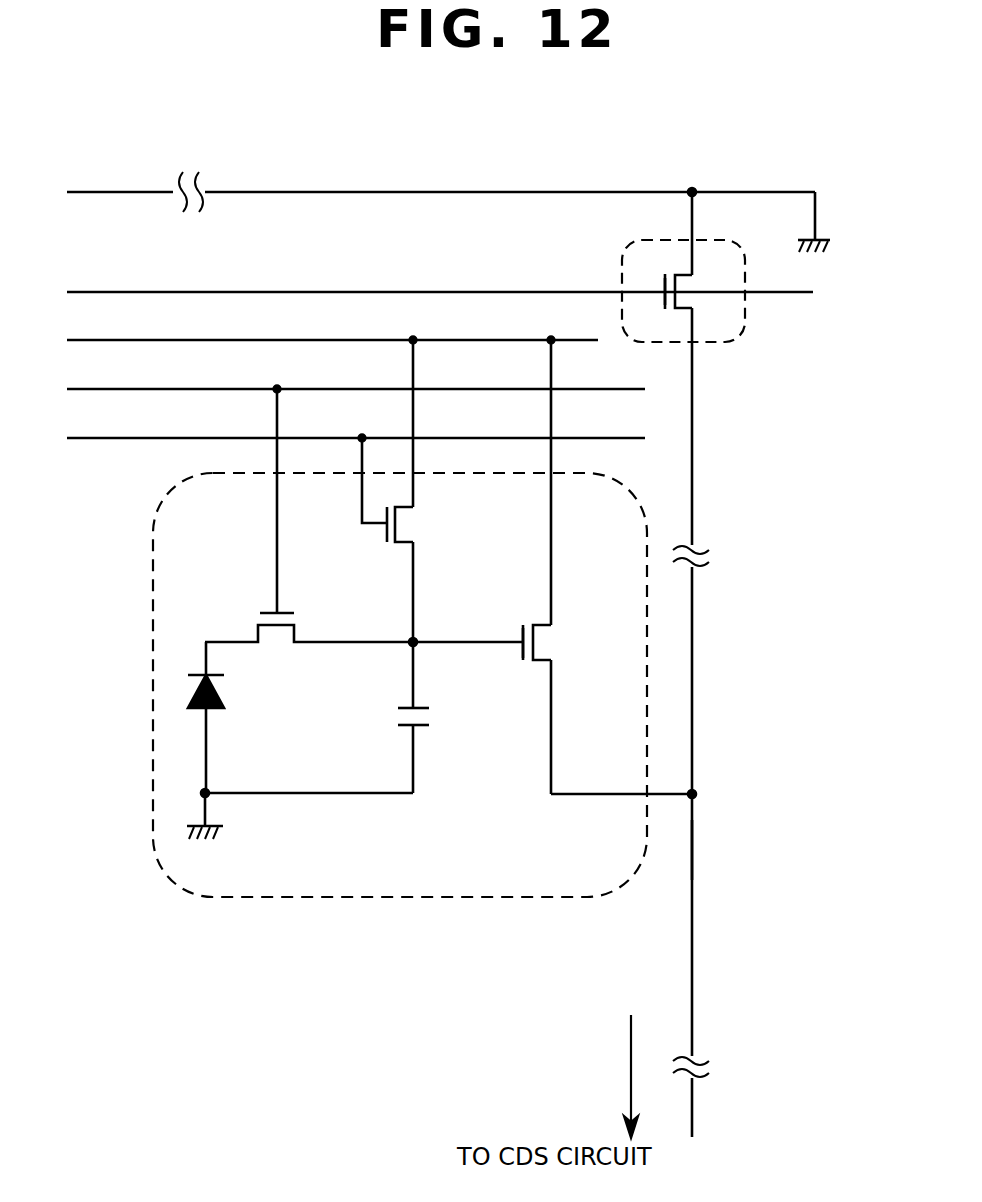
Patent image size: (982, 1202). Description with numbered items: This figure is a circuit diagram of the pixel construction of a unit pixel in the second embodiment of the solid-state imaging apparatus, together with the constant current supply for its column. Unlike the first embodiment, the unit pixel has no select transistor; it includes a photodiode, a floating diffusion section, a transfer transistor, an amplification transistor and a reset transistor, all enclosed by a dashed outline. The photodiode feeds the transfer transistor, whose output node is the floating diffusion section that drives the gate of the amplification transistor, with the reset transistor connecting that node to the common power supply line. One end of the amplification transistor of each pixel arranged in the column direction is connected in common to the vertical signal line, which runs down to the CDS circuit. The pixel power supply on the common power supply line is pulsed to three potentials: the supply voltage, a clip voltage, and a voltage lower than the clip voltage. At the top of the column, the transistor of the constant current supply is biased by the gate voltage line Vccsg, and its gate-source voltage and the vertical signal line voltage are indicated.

The gate voltage line Vccsg is at (440, 278).